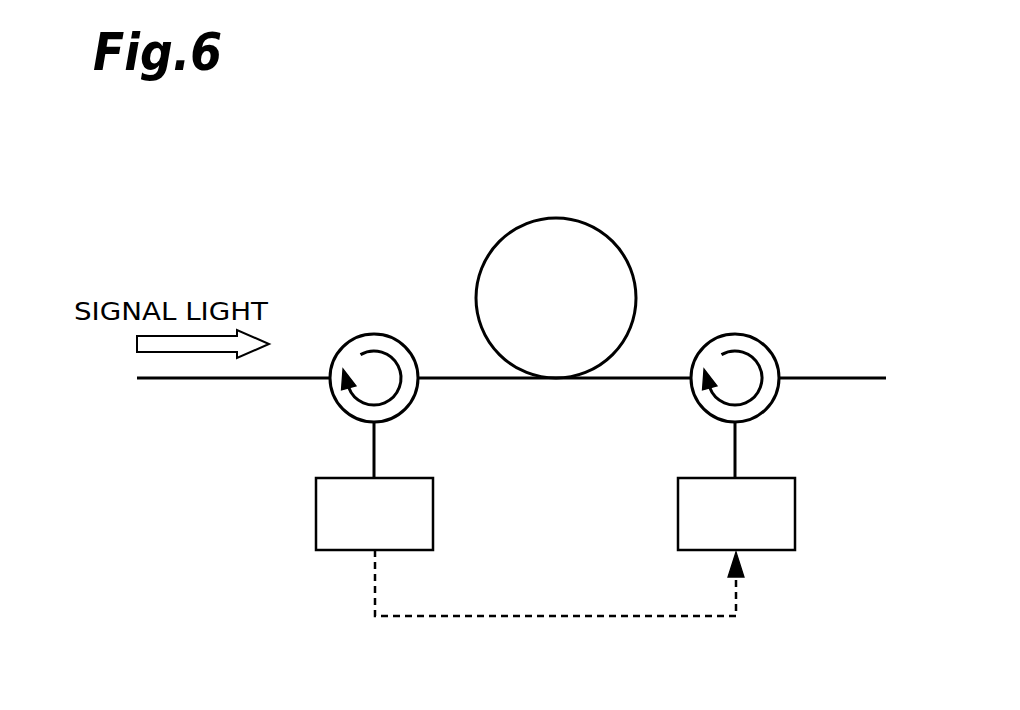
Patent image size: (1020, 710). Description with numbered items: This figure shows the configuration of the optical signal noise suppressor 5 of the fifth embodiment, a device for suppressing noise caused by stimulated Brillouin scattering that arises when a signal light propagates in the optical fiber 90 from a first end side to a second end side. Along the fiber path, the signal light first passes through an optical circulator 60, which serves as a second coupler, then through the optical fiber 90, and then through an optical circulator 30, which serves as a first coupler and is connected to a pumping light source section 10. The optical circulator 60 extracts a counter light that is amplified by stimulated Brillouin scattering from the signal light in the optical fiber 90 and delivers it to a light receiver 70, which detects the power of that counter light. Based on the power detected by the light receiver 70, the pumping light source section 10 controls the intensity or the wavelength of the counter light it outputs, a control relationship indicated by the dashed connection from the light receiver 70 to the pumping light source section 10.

The optical signal noise suppressor 5 is at (793, 107).
The pumping light source section 10 is at (795, 510).
The optical circulator 30 is at (739, 336).
The optical circulator 60 is at (378, 336).
The light receiver 70 is at (433, 510).
The optical fiber 90 is at (608, 233).